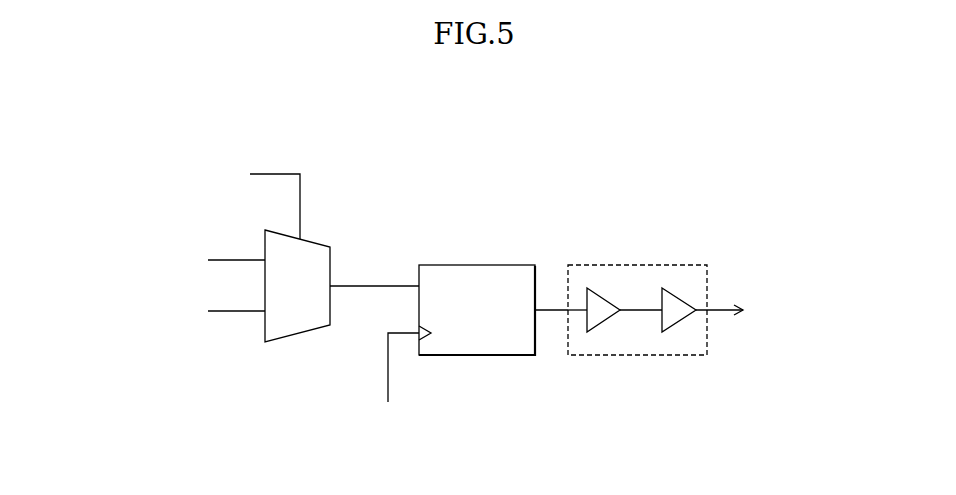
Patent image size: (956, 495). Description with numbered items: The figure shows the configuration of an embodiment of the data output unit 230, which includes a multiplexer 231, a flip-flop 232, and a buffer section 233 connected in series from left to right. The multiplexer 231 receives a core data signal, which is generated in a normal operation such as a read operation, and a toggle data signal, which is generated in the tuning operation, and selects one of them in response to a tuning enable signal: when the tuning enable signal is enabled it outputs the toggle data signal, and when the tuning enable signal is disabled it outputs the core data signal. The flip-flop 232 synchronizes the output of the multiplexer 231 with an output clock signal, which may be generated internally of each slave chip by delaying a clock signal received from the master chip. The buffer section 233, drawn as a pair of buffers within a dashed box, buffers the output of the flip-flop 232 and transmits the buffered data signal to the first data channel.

The data output unit 230 is at (172, 116).
The multiplexer 231 is at (310, 240).
The flip-flop 232 is at (498, 264).
The buffer section 233 is at (673, 265).